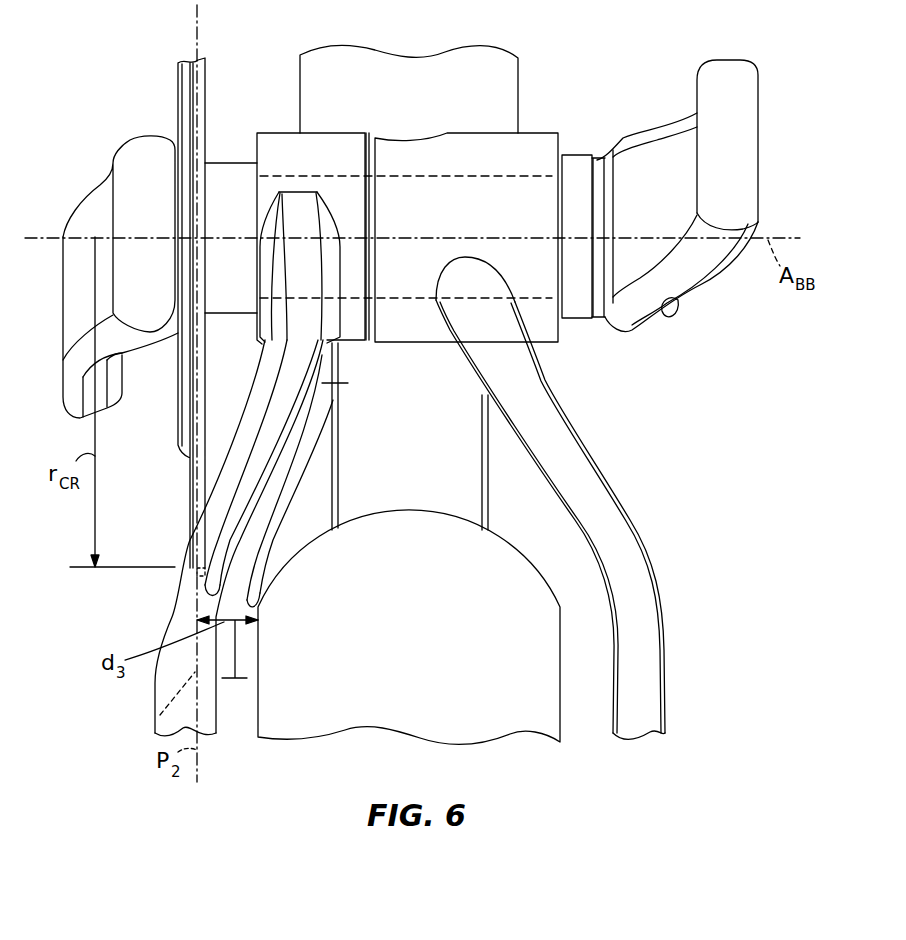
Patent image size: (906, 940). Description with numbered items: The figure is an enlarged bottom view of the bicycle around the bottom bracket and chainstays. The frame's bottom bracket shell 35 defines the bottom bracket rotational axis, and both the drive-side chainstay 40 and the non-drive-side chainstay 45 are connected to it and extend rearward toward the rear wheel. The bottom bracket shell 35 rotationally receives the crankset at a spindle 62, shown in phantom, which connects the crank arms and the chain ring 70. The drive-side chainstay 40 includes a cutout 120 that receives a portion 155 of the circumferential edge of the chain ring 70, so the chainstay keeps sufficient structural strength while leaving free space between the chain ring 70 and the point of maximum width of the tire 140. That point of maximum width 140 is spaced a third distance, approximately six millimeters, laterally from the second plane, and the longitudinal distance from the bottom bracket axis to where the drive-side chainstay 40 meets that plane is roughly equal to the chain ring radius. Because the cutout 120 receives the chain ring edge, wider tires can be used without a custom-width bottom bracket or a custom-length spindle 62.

The bottom bracket shell 35 is at (537, 145).
The spindle 62 is at (283, 172).
The chain ring 70 is at (188, 490).
The cutout 120 is at (293, 502).
The point of maximum width of the tire 140 is at (255, 597).
The portion of the circumferential edge 155 is at (203, 577).
The drive-side chainstay 40 is at (167, 683).
The non-drive-side chainstay 45 is at (652, 638).